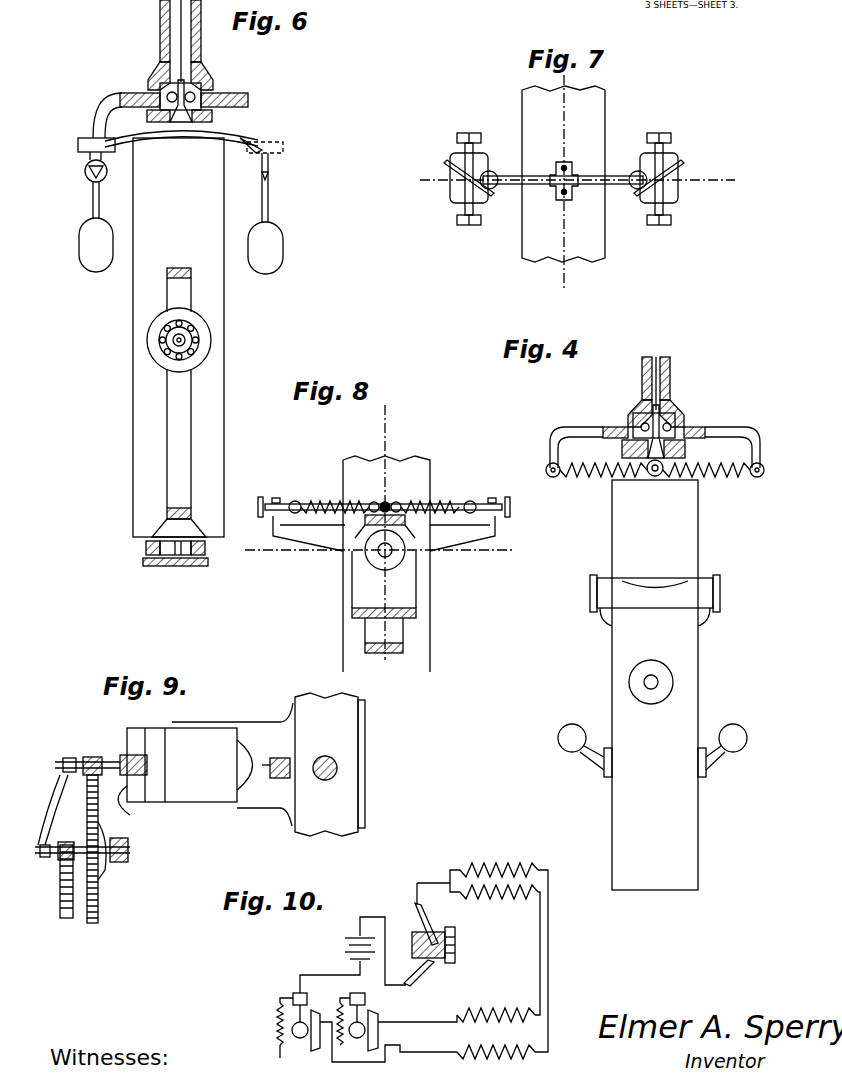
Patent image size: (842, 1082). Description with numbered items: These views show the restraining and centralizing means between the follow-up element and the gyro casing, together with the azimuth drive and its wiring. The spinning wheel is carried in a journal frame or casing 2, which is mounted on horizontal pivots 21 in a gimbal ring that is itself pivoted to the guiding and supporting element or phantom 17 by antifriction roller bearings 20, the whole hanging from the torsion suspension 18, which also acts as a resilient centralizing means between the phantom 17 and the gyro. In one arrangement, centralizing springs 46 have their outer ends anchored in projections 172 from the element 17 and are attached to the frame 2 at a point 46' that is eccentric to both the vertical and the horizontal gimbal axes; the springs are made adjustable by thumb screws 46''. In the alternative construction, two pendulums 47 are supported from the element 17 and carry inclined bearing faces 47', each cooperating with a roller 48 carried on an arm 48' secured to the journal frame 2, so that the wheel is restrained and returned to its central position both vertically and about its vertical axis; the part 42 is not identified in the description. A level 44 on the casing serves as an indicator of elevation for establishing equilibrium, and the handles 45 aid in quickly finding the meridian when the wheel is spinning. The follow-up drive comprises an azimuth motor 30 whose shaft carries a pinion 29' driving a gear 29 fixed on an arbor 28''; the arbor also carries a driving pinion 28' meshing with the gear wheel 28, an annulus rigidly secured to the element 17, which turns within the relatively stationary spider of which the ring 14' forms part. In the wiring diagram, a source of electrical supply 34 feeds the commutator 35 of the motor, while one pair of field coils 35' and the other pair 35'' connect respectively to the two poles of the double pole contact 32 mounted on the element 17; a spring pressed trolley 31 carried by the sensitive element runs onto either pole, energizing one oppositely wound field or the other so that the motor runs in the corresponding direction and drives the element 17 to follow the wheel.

In FIG. 6, the journal frame or casing 2 is at (178, 337).
In FIG. 7, the journal frame or casing 2 is at (563, 174).
In FIG. 4, the journal frame or casing 2 is at (655, 685).
In FIG. 9, the ring 14' is at (330, 764).
In FIG. 6, the guiding and supporting element or phantom 17 is at (112, 106).
In FIG. 7, the guiding and supporting element or phantom 17 is at (457, 137).
In FIG. 4, the guiding and supporting element or phantom 17 is at (688, 430).
In FIG. 4, the projections 172 is at (752, 432).
In FIG. 6, the torsion suspension 18 is at (178, 38).
In FIG. 4, the torsion suspension 18 is at (652, 382).
In FIG. 4, the antifriction roller bearings 20 is at (665, 420).
In FIG. 8, the antifriction roller bearings 20 is at (376, 556).
In FIG. 6, the horizontal pivots 21 is at (163, 345).
In FIG. 4, the horizontal pivots 21 is at (655, 679).
In FIG. 9, the gear-wheel 28 is at (79, 849).
In FIG. 9, the driving pinion 28' is at (64, 841).
In FIG. 9, the arbor 28'' is at (141, 850).
In FIG. 9, the gear 29 is at (107, 849).
In FIG. 9, the pinion 29' is at (101, 754).
In FIG. 9, the azimuth motor 30 is at (210, 764).
In FIG. 10, the wheel or trolley contact 31 is at (298, 1038).
In FIG. 10, the double pole contact 32 is at (386, 1015).
In FIG. 10, the source of electrical supply 34 is at (353, 955).
In FIG. 9, the commutator 35 is at (136, 809).
In FIG. 10, the commutator 35 is at (443, 934).
In FIG. 10, the first pair of field coils 35' is at (482, 943).
In FIG. 10, the second pair of field coils 35'' is at (496, 1022).
In FIG. 6, the arm 42 is at (181, 133).
In FIG. 4, the level 44 is at (655, 600).
In FIG. 4, the handles 45 is at (558, 739).
In FIG. 4, the centralizing springs 46 is at (653, 483).
In FIG. 8, the centralizing springs 46 is at (379, 495).
In FIG. 4, the attachment point 46' is at (669, 485).
In FIG. 8, the attachment point 46' is at (383, 490).
In FIG. 8, the adjusting screws 46'' is at (371, 489).
In FIG. 6, the pendulums 47 is at (179, 213).
In FIG. 7, the pendulums 47 is at (558, 188).
In FIG. 6, the inclined bearing faces 47' is at (176, 138).
In FIG. 7, the inclined bearing faces 47' is at (558, 175).
In FIG. 6, the rollers 48 is at (242, 134).
In FIG. 7, the rollers 48 is at (563, 168).
In FIG. 7, the arms 48' is at (564, 165).